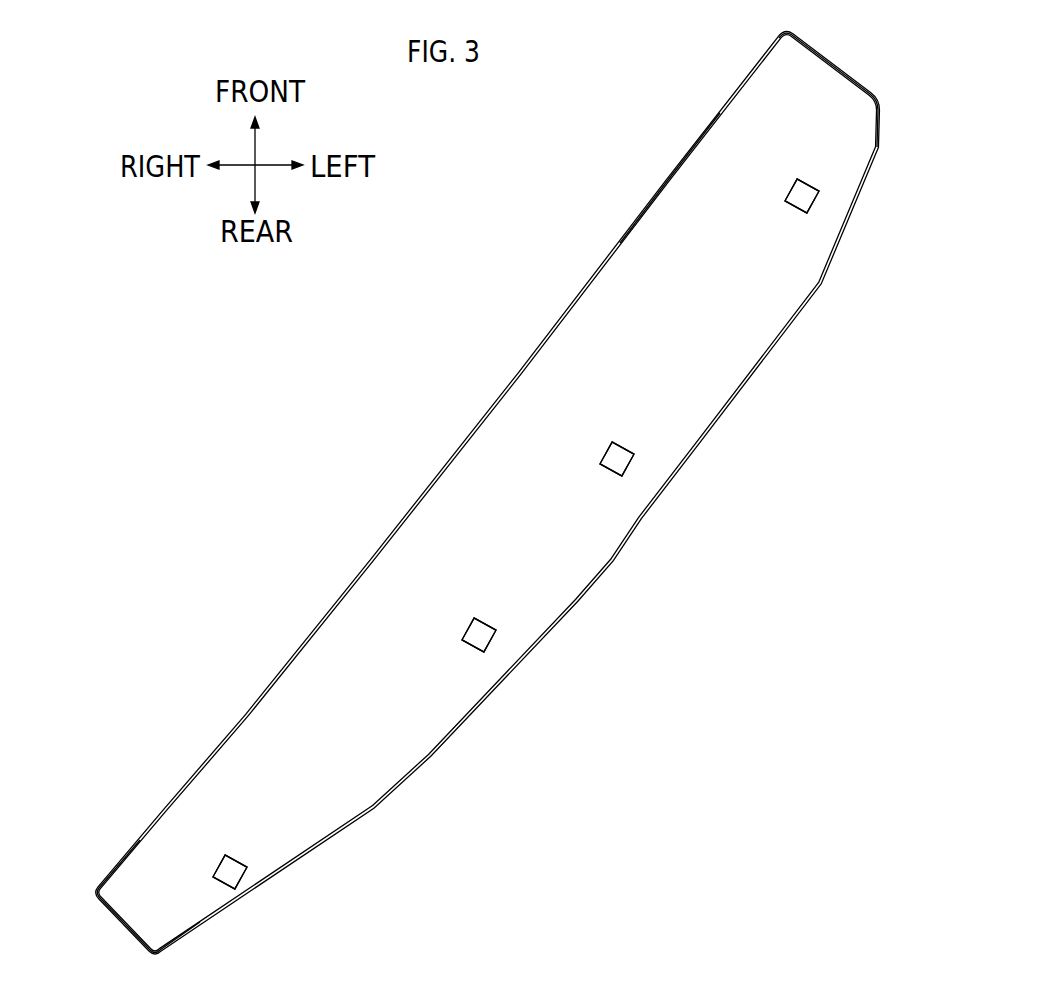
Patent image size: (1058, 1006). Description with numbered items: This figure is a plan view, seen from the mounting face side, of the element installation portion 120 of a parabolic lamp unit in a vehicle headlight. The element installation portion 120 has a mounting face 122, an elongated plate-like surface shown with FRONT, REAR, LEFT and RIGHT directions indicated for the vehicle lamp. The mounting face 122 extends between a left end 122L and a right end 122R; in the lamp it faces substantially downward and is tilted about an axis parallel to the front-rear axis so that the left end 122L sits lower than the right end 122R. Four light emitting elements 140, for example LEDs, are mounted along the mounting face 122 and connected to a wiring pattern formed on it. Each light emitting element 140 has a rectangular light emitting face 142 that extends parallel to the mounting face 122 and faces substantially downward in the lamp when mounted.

The element installation portion 120 is at (803, 317).
The mounting face 122 is at (695, 170).
The left end 122L is at (832, 88).
The right end 122R is at (135, 911).
The light emitting element 140 is at (813, 178).
The light emitting face 142 is at (791, 192).